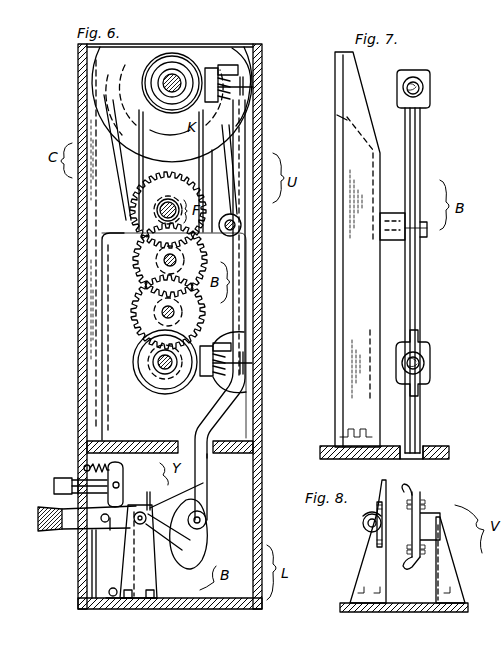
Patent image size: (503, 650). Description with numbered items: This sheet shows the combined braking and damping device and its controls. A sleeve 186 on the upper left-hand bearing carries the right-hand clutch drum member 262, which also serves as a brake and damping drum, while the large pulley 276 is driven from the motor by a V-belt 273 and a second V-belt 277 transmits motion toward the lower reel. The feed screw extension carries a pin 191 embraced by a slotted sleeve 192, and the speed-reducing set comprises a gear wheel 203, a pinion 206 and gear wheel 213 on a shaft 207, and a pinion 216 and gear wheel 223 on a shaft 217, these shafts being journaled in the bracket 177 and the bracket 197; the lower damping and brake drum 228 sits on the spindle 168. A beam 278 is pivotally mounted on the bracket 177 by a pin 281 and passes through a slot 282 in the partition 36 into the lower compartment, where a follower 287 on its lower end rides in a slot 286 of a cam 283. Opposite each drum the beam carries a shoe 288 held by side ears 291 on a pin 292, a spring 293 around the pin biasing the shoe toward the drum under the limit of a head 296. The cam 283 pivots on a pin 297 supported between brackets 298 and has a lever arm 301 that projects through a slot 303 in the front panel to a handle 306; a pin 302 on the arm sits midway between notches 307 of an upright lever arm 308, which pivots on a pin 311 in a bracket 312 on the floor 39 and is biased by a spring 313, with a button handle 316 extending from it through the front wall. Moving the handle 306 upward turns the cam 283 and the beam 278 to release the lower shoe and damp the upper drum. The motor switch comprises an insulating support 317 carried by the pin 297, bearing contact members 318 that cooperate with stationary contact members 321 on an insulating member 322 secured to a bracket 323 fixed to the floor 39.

In FIG. 6, the partition 36 is at (262, 450).
In FIG. 7, the partition 36 is at (452, 450).
In FIG. 6, the floor 39 is at (212, 609).
In FIG. 8, the floor 39 is at (357, 612).
In FIG. 6, the spindle 168 is at (161, 378).
In FIG. 7, the bracket 177 is at (335, 243).
In FIG. 6, the sleeve 186 is at (163, 83).
In FIG. 6, the pin 191 is at (168, 210).
In FIG. 6, the slotted sleeve 192 is at (159, 204).
In FIG. 6, the bracket 197 is at (87, 290).
In FIG. 6, the gear wheel 203 is at (174, 297).
In FIG. 6, the pinion 206 is at (121, 288).
In FIG. 6, the shaft 207 is at (170, 254).
In FIG. 6, the gear wheel 213 is at (224, 252).
In FIG. 6, the pinion 216 is at (140, 318).
In FIG. 6, the shaft 217 is at (168, 306).
In FIG. 6, the gear wheel 223 is at (121, 302).
In FIG. 6, the damping and brake drum 228 is at (157, 386).
In FIG. 6, the clutch drum member 262 is at (182, 53).
In FIG. 6, the V-belt 273 is at (116, 200).
In FIG. 6, the large pulley 276 is at (100, 92).
In FIG. 6, the V-belt 277 is at (203, 150).
In FIG. 6, the beam 278 is at (247, 326).
In FIG. 7, the beam 278 is at (420, 297).
In FIG. 6, the pin 281 is at (241, 225).
In FIG. 7, the pin 281 is at (427, 235).
In FIG. 6, the slot 282 is at (212, 458).
In FIG. 7, the slot 282 is at (420, 448).
In FIG. 6, the cam 283 is at (210, 542).
In FIG. 6, the slot 286 is at (186, 556).
In FIG. 6, the follower 287 is at (205, 512).
In FIG. 6, the shoe 288 is at (222, 65).
In FIG. 6, the side ears 291 is at (240, 66).
In FIG. 6, the pin 292 is at (248, 80).
In FIG. 7, the pin 292 is at (423, 87).
In FIG. 6, the spring 293 is at (248, 96).
In FIG. 6, the head 296 is at (250, 87).
In FIG. 7, the head 296 is at (420, 93).
In FIG. 6, the pin 297 is at (146, 516).
In FIG. 8, the pin 297 is at (363, 524).
In FIG. 6, the brackets 298 is at (150, 600).
In FIG. 6, the lever arm 301 is at (78, 545).
In FIG. 6, the pin 302 is at (104, 533).
In FIG. 6, the slot 303 is at (68, 564).
In FIG. 6, the handle 306 is at (64, 529).
In FIG. 6, the notches 307 is at (124, 492).
In FIG. 6, the upright lever arm 308 is at (106, 592).
In FIG. 6, the pin 311 is at (122, 600).
In FIG. 6, the bracket 312 is at (104, 598).
In FIG. 6, the spring 313 is at (104, 463).
In FIG. 6, the button handle 316 is at (60, 478).
In FIG. 8, the insulating support 317 is at (377, 536).
In FIG. 6, the contact members 318 is at (138, 545).
In FIG. 8, the contact members 318 is at (383, 566).
In FIG. 8, the stationary contact members 321 is at (416, 494).
In FIG. 8, the insulating member 322 is at (422, 566).
In FIG. 8, the bracket 323 is at (456, 589).